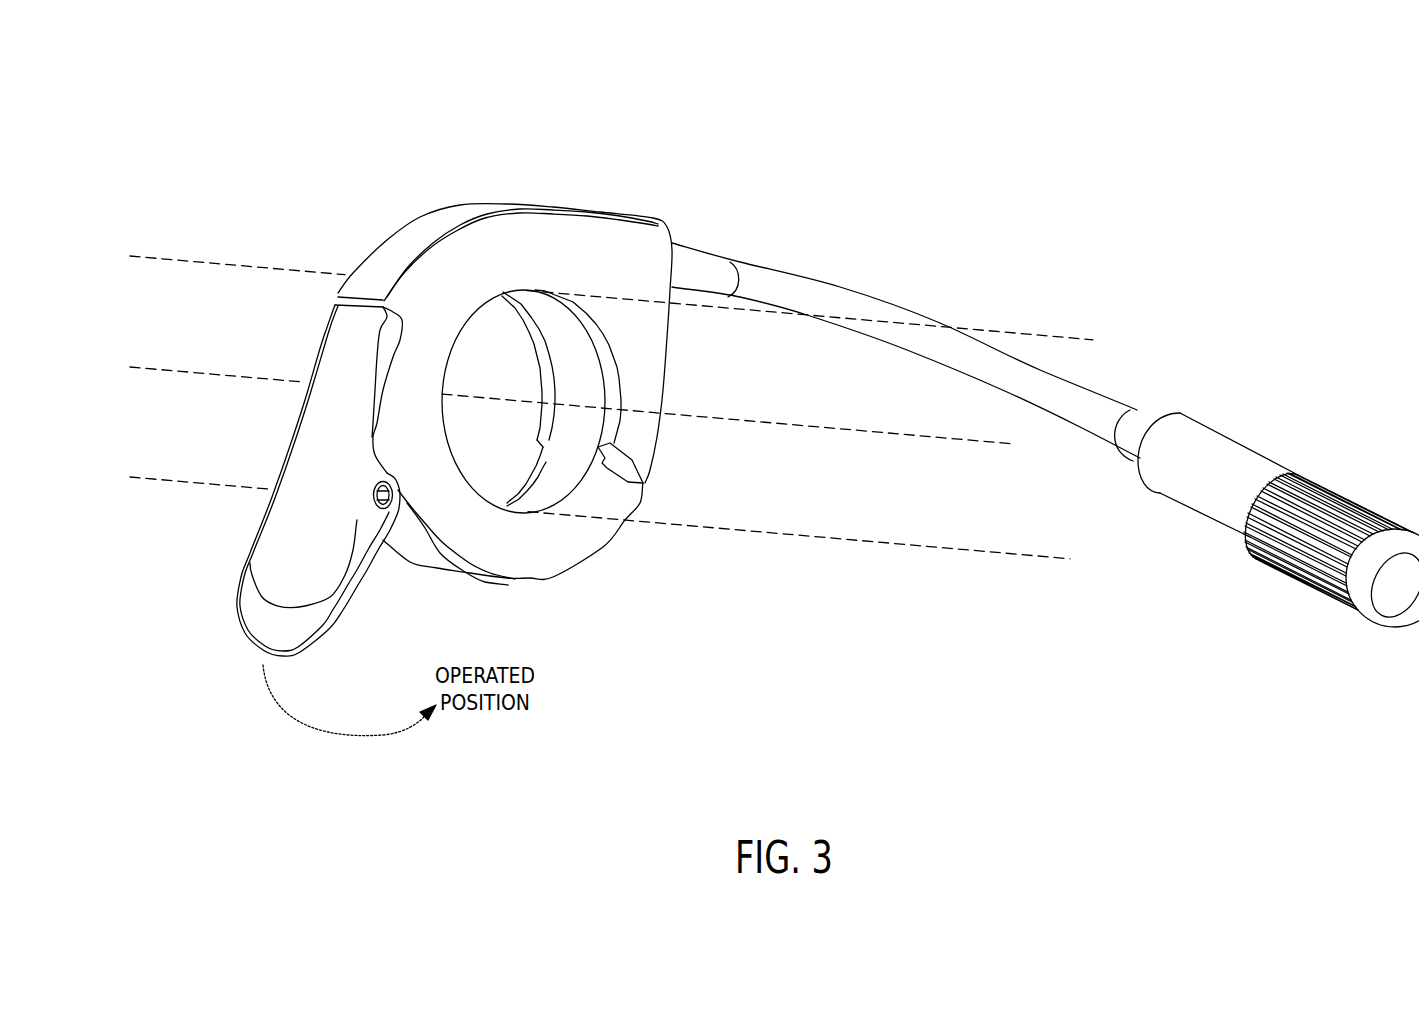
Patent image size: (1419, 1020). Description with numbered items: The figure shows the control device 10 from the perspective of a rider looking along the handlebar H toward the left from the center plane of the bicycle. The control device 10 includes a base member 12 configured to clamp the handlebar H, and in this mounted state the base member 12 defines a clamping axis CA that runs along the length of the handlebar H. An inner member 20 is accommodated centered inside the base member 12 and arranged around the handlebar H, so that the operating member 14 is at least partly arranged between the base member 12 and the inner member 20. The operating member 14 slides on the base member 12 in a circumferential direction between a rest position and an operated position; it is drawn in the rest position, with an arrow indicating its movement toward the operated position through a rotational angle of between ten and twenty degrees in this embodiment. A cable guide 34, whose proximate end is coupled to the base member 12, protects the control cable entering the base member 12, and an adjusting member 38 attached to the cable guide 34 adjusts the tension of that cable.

The control device 10 is at (804, 130).
The base member 12 is at (510, 580).
The operating member 14 is at (237, 585).
The inner member 20 is at (578, 462).
The cable guide 34 is at (878, 297).
The adjusting member 38 is at (1337, 493).
The handlebar H is at (267, 266).
The clamping axis CA is at (247, 379).